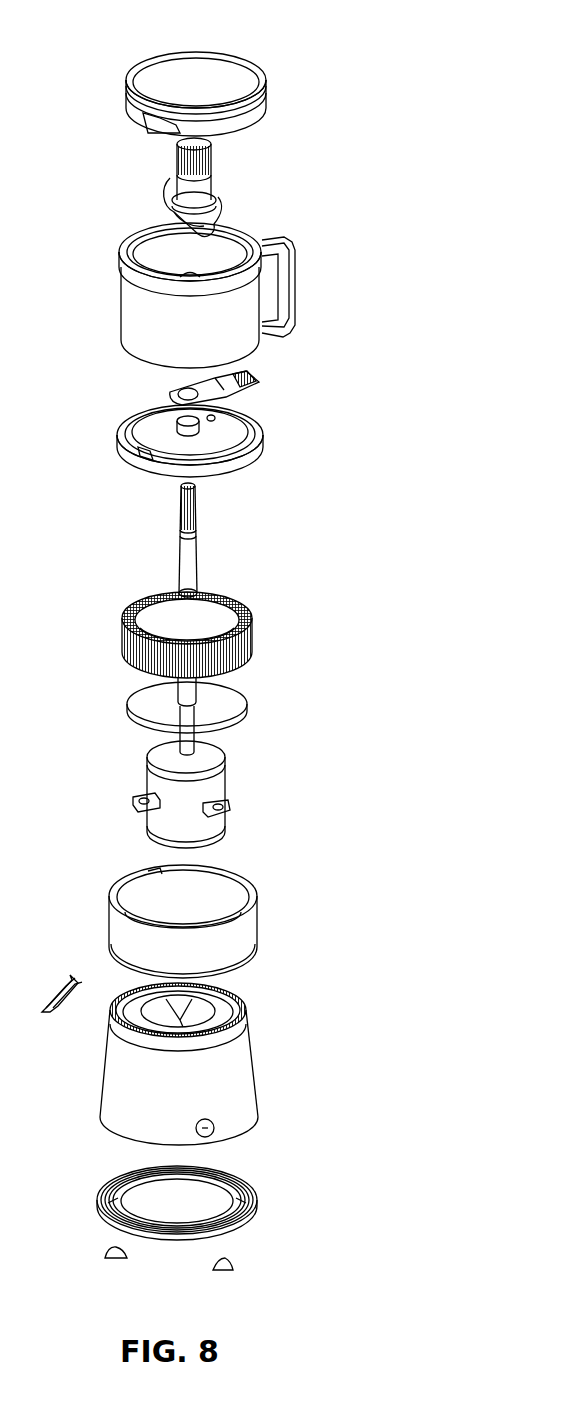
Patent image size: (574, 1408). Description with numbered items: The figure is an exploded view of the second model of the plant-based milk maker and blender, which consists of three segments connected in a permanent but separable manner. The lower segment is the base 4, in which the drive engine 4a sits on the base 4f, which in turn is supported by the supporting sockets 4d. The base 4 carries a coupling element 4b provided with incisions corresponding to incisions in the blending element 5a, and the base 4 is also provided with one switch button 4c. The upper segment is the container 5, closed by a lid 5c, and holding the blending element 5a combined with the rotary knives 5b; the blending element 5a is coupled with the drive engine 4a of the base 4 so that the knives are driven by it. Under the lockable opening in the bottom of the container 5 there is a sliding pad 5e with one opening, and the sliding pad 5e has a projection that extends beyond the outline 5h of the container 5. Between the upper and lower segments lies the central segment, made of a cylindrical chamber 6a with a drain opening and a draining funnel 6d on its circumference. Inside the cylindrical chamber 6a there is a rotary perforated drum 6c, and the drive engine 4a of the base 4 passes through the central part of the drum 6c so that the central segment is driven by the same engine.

The container 5 is at (133, 316).
The blending element 5a is at (183, 186).
The rotary knives 5b is at (218, 216).
The lid 5c is at (212, 72).
The sliding pad 5e is at (240, 380).
The outline of the container 5h is at (125, 455).
The base 4 is at (235, 1068).
The drive engine 4a is at (150, 822).
The coupling element 4b is at (190, 552).
The switch button 4c is at (214, 1131).
The supporting sockets 4d is at (105, 1253).
The base ring 4f is at (103, 1200).
The cylindrical chamber 6a is at (248, 928).
The rotary perforated drum 6c is at (250, 645).
The draining funnel 6d is at (46, 1022).